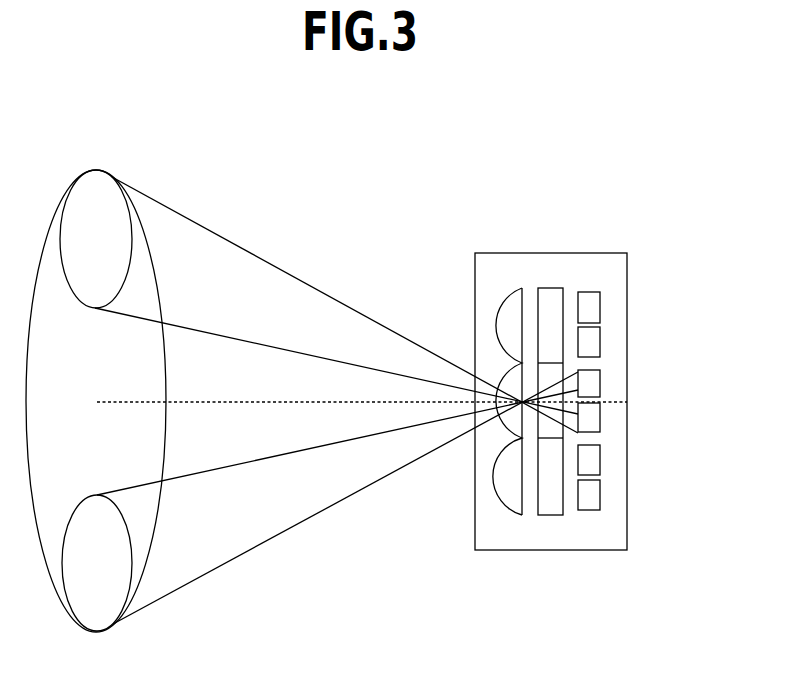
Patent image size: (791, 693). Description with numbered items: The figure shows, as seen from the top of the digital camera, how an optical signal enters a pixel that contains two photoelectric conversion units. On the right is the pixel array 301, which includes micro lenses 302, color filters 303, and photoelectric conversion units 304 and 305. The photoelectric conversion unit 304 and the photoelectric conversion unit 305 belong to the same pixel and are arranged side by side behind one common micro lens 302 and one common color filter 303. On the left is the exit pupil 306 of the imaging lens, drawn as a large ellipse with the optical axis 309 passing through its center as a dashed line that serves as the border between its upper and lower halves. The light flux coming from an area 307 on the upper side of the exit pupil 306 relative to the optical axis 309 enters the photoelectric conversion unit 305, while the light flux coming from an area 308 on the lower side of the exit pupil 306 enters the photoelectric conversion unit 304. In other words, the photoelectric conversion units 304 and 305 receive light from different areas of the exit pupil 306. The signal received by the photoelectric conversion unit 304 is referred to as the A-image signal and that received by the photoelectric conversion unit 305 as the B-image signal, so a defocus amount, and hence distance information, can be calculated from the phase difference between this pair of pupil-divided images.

The pixel array 301 is at (628, 277).
The micro lens 302 is at (515, 288).
The color filter 303 is at (553, 288).
The photoelectric conversion unit 304 is at (600, 373).
The photoelectric conversion unit 305 is at (600, 418).
The exit pupil 306 is at (163, 292).
The area 307 is at (98, 168).
The area 308 is at (78, 495).
The optical axis 309 is at (208, 400).